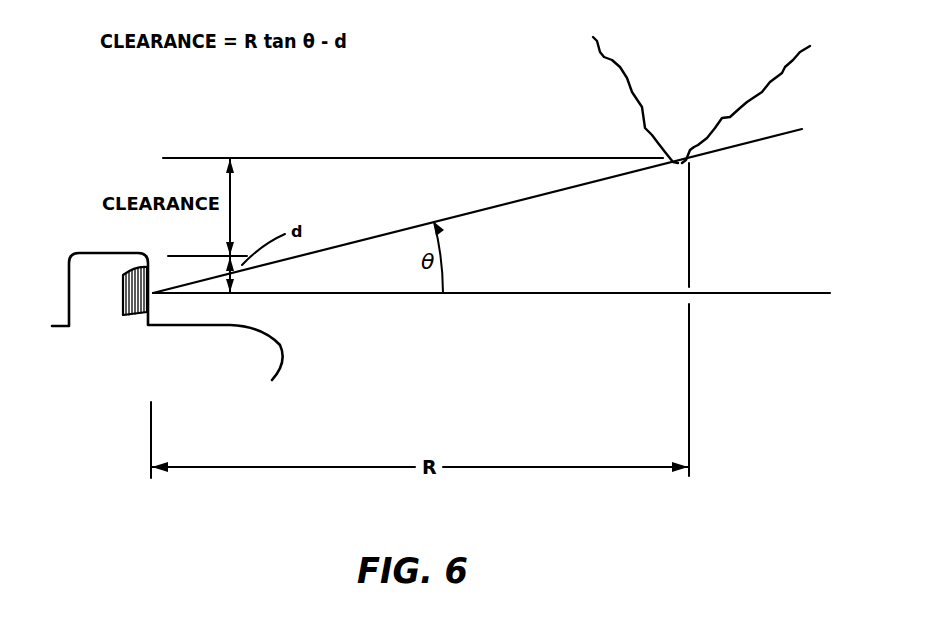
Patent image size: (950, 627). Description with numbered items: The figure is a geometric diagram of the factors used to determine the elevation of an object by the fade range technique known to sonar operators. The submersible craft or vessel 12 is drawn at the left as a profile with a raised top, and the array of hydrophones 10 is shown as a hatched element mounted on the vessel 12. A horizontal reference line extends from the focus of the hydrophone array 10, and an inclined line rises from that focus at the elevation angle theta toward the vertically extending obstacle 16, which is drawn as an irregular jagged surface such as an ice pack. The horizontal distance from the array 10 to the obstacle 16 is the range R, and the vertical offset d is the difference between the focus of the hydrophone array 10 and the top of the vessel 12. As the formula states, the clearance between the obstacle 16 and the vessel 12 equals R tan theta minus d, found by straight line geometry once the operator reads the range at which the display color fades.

The array of hydrophones 10 is at (152, 288).
The submersible craft or vessel 12 is at (66, 248).
The vertically extending obstacle 16 is at (697, 118).